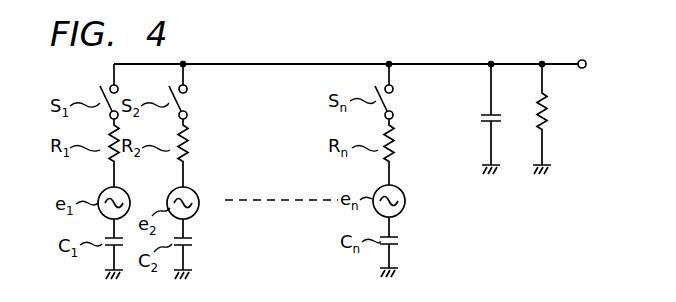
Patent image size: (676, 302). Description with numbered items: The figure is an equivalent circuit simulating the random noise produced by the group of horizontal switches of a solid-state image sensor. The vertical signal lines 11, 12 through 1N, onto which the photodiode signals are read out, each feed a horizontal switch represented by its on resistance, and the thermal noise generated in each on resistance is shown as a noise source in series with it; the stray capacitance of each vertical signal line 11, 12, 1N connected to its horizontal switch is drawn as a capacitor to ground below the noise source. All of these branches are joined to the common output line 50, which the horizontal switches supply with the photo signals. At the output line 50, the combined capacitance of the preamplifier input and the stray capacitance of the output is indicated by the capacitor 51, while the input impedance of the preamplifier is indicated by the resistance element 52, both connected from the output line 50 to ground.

The vertical signal line 11 is at (116, 177).
The vertical signal line 12 is at (185, 177).
The vertical signal line 1N is at (391, 174).
The output line 50 is at (440, 64).
The capacitor 51 is at (480, 118).
The resistance element 52 is at (548, 112).